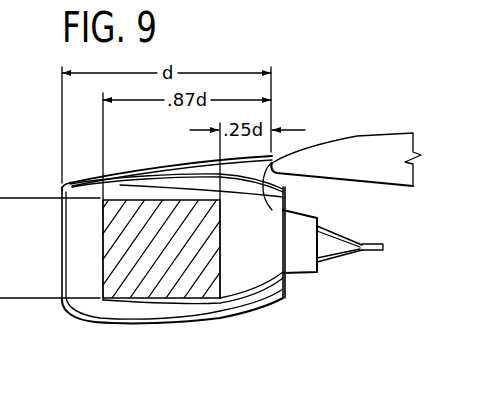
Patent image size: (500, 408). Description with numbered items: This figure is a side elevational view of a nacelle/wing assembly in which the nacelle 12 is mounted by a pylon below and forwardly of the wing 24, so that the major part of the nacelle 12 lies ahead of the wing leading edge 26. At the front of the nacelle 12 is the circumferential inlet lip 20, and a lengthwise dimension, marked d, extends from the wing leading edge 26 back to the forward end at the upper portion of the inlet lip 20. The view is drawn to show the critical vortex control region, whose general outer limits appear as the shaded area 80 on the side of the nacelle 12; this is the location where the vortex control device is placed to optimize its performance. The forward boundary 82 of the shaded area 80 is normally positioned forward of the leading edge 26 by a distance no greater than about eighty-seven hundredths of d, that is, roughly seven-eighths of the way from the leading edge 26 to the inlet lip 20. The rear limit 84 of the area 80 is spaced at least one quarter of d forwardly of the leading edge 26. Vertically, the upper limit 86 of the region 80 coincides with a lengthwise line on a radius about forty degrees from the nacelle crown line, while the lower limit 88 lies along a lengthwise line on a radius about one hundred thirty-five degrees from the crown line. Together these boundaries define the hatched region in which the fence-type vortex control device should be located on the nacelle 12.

The nacelle 12 is at (88, 322).
The inlet lip 20 is at (62, 192).
The wing 24 is at (365, 131).
The leading edge 26 is at (285, 207).
The shaded area 80 is at (177, 267).
The forward boundary 82 is at (153, 282).
The rear limit 84 is at (224, 257).
The upper limit 86 is at (163, 200).
The lower limit 88 is at (152, 298).